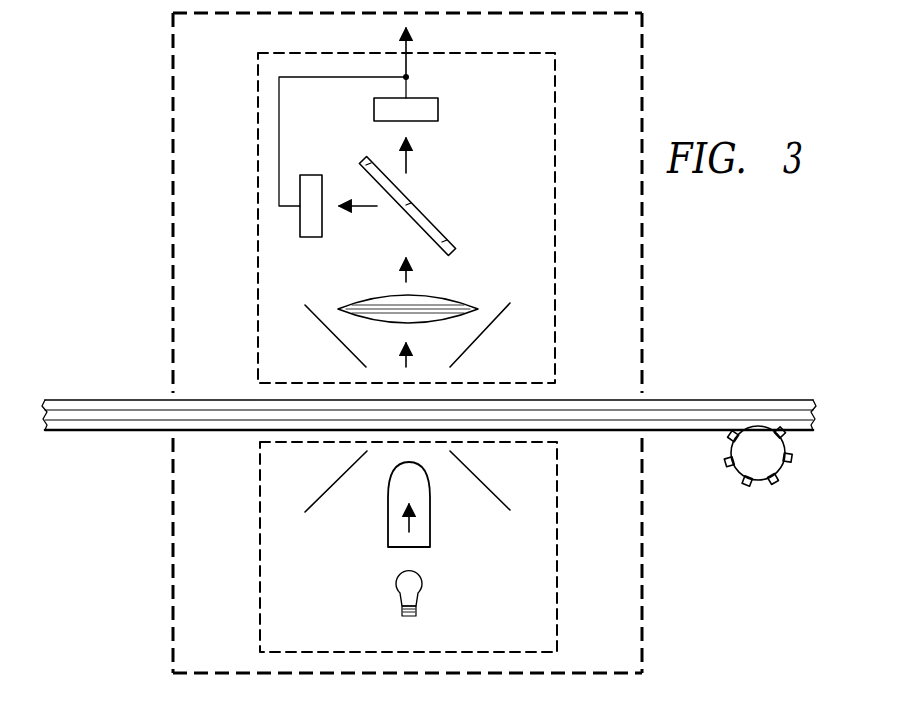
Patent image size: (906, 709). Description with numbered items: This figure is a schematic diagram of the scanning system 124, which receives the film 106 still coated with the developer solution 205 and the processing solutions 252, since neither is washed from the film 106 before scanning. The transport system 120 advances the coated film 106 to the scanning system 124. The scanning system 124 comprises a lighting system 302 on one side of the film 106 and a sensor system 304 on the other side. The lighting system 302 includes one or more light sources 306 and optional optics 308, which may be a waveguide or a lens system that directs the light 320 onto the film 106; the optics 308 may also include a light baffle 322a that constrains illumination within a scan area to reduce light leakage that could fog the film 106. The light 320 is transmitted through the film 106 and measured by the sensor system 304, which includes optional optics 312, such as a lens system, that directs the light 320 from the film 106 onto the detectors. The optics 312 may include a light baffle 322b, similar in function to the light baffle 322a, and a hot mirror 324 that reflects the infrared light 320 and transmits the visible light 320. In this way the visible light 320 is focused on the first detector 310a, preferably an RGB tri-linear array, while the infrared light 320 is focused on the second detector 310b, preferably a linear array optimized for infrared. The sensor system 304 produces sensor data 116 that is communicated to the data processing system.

The scanning system 124 is at (172, 60).
The sensor data 116 is at (410, 44).
The sensor system 304 is at (258, 200).
The first detector 310a is at (440, 112).
The second detector 310b is at (308, 238).
The light 320 is at (410, 158).
The hot mirror 324 is at (428, 220).
The optics 312 is at (382, 297).
The light baffle 322b is at (498, 305).
The processing solutions 252 is at (780, 402).
The developer solution 205 is at (80, 417).
The film 106 is at (62, 430).
The transport system 120 is at (758, 480).
The lighting system 302 is at (260, 545).
The light baffle 322a is at (500, 510).
The optics 308 is at (388, 525).
The light source 306 is at (403, 610).